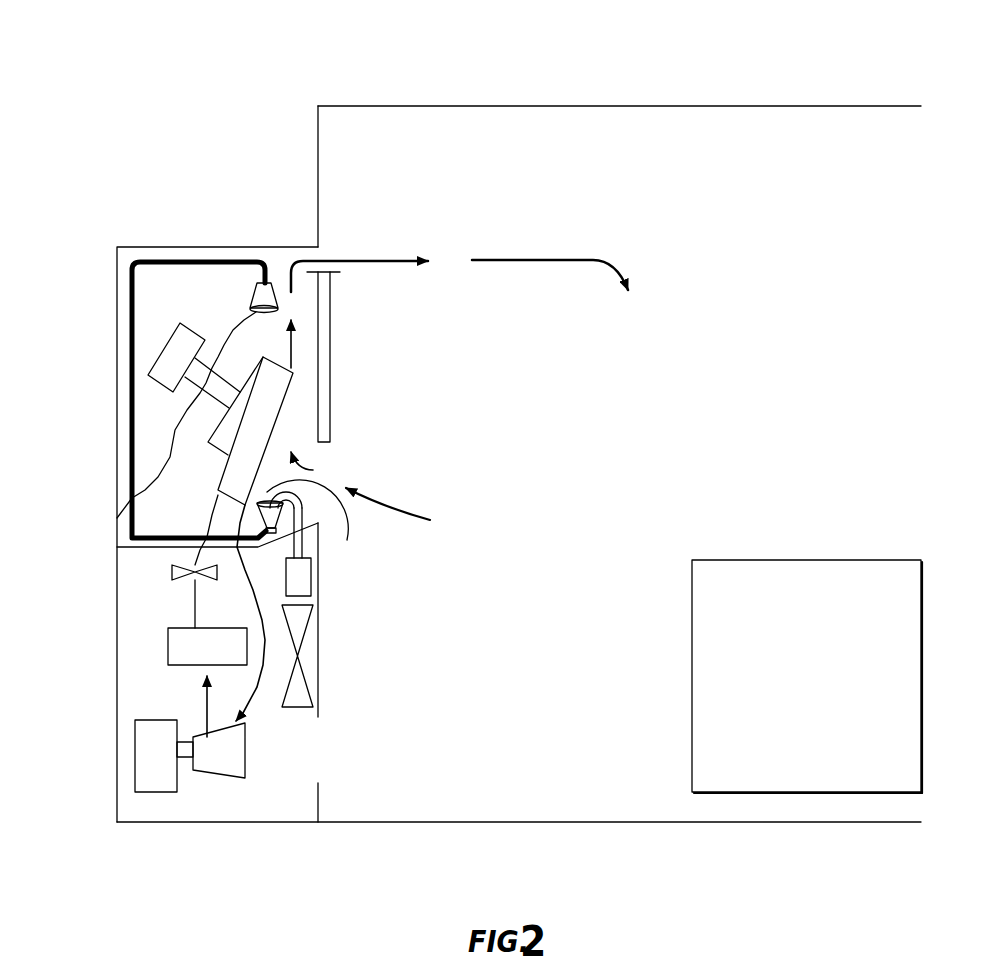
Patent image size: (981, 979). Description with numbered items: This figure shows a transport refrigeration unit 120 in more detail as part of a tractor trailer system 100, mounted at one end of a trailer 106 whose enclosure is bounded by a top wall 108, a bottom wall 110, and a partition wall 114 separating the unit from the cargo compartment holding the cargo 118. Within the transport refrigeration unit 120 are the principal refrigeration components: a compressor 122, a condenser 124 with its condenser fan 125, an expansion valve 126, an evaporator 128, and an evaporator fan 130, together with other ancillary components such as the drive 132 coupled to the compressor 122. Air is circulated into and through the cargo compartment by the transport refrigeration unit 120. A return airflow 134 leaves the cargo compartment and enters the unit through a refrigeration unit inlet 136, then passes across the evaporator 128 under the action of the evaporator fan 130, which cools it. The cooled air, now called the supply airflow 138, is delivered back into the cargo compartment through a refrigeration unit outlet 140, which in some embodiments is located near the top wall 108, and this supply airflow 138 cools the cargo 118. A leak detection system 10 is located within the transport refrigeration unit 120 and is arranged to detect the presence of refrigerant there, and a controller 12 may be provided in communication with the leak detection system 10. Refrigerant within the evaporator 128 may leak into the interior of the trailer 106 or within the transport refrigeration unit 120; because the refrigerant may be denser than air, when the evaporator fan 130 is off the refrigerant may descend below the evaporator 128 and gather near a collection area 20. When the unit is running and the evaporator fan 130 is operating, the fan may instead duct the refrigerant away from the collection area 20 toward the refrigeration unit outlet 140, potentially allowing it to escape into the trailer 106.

The HVAC system 100 is at (254, 70).
The trailer 106 is at (519, 454).
The top wall 108 is at (619, 69).
The bottom wall 110 is at (519, 860).
The partition wall 114 is at (293, 464).
The cargo 118 is at (827, 692).
The transport refrigeration unit 120 is at (108, 220).
The leak detection system 10 is at (157, 400).
The evaporator fan 130 is at (151, 389).
The evaporator 128 is at (320, 422).
The refrigeration unit outlet 140 is at (370, 289).
The supply airflow 138 is at (550, 230).
The refrigeration unit inlet 136 is at (374, 446).
The return airflow 134 is at (394, 539).
The collection area 20 is at (308, 526).
The controller 12 is at (341, 617).
The condenser fan 125 is at (290, 686).
The expansion valve 126 is at (120, 561).
The condenser 124 is at (134, 677).
The motor 132 is at (115, 754).
The compressor 122 is at (229, 696).